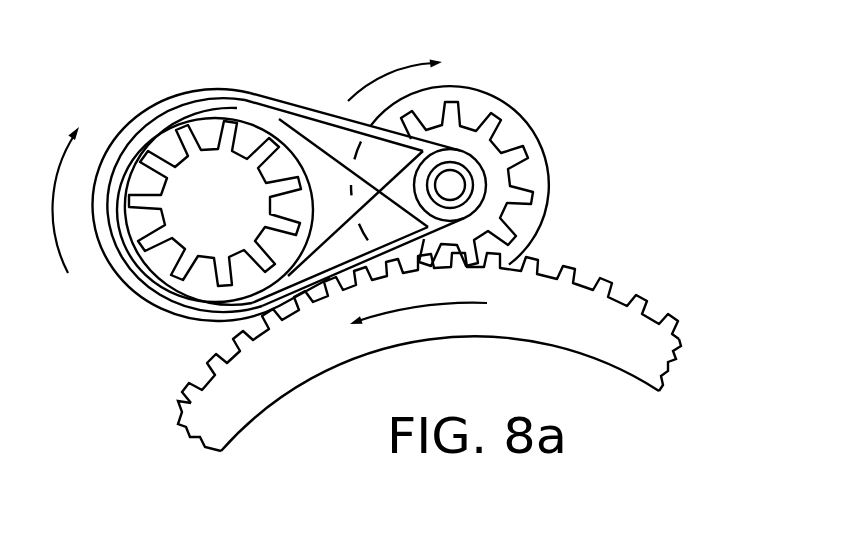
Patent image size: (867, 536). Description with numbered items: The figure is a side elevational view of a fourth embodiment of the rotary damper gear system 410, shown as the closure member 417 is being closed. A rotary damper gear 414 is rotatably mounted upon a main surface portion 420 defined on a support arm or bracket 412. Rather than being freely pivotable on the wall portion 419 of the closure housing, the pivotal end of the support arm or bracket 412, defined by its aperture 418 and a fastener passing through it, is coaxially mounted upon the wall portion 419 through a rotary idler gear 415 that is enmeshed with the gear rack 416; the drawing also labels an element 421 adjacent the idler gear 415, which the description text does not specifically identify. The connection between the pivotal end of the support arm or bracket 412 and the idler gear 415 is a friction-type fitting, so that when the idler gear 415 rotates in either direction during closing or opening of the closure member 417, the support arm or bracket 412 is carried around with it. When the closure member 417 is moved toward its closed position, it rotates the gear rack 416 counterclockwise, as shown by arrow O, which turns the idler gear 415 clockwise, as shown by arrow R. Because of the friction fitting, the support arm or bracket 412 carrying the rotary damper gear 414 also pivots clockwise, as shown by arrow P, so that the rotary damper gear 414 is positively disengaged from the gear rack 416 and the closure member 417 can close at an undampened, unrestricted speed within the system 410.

The rotary damper gear system 410 is at (665, 162).
The support arm or bracket 412 is at (218, 90).
The rotary damper gear 414 is at (233, 177).
The rotary idler gear 415 is at (490, 152).
The gear rack 416 is at (598, 360).
The closure member 417 is at (410, 393).
The aperture 418 is at (457, 187).
The wall portion of the closure housing 419 is at (618, 170).
The main surface portion 420 is at (163, 128).
The pinion disc 421 is at (483, 103).